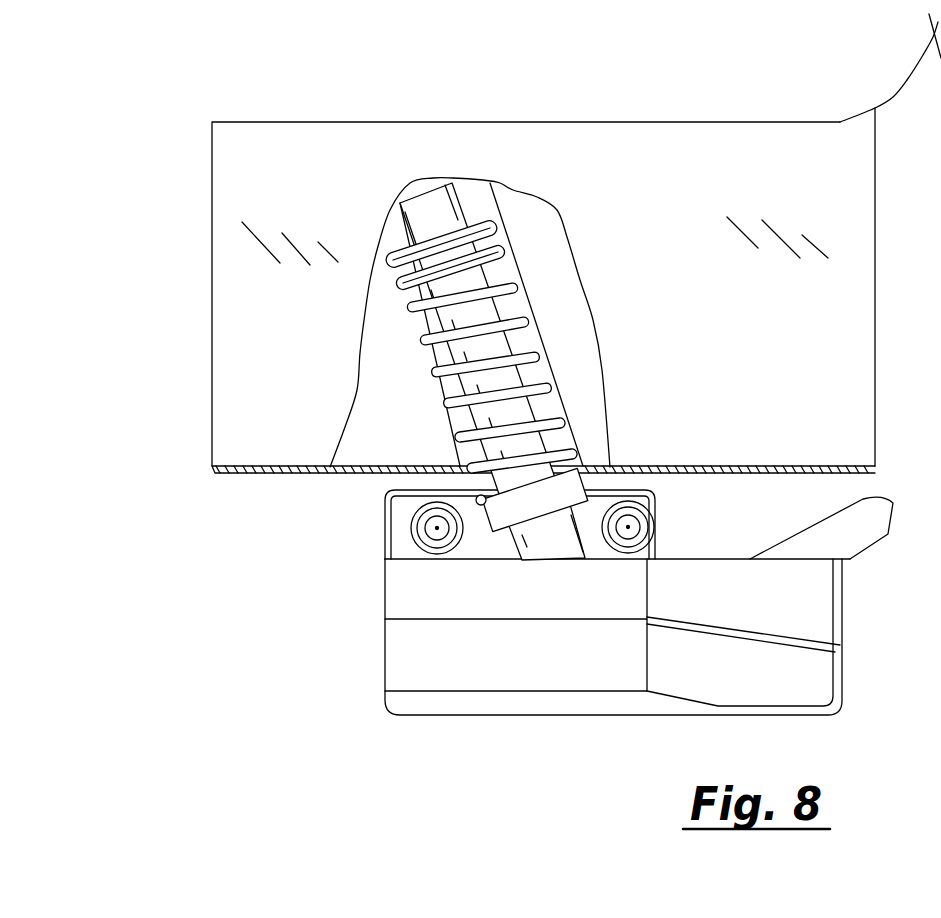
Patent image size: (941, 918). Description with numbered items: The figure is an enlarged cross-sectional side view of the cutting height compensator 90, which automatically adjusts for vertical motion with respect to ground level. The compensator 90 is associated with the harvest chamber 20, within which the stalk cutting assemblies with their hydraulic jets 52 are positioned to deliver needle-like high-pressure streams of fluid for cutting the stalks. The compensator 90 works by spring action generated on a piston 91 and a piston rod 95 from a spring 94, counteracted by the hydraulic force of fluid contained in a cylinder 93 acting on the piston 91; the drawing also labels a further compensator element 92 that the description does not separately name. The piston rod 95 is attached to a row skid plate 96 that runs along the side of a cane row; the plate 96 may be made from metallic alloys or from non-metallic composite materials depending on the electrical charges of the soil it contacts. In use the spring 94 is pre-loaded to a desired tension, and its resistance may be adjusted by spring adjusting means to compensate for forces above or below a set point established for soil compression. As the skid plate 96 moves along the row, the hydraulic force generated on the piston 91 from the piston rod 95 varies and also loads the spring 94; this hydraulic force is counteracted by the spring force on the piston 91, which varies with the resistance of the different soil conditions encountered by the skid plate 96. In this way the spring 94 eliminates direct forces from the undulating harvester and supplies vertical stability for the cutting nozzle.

The harvest chamber 20 is at (779, 379).
The hydraulic jets 52 is at (437, 528).
The compensator 90 is at (487, 223).
The piston 91 is at (400, 273).
The spring housing 92 is at (537, 323).
The cylinder 93 is at (390, 235).
The spring 94 is at (455, 432).
The piston rod 95 is at (587, 487).
The row skid plate 96 is at (573, 663).